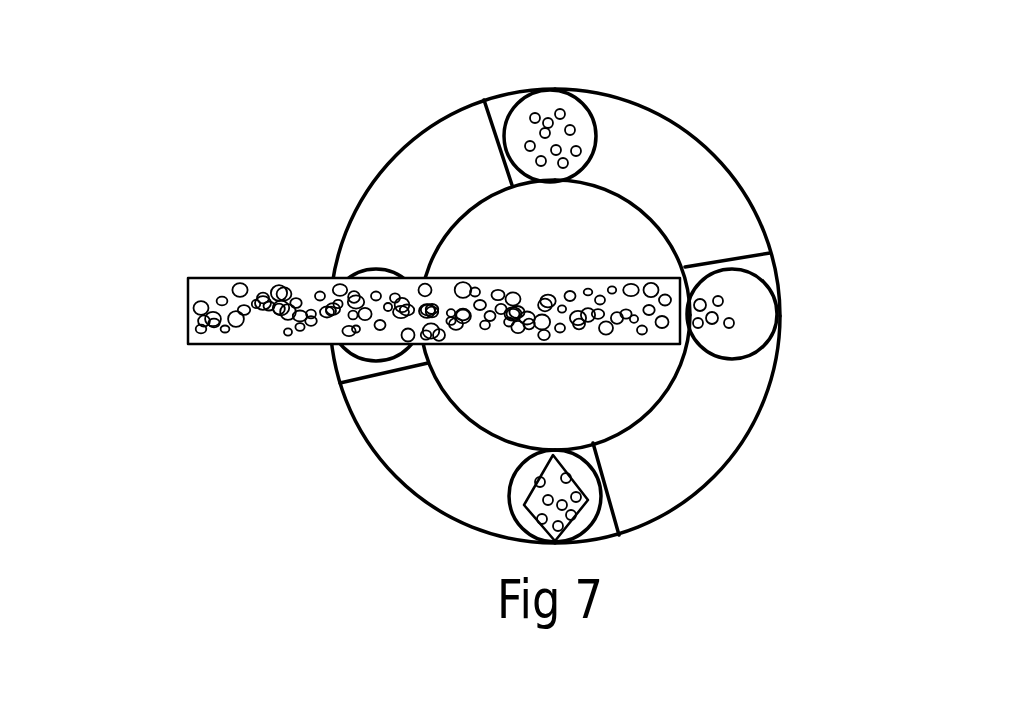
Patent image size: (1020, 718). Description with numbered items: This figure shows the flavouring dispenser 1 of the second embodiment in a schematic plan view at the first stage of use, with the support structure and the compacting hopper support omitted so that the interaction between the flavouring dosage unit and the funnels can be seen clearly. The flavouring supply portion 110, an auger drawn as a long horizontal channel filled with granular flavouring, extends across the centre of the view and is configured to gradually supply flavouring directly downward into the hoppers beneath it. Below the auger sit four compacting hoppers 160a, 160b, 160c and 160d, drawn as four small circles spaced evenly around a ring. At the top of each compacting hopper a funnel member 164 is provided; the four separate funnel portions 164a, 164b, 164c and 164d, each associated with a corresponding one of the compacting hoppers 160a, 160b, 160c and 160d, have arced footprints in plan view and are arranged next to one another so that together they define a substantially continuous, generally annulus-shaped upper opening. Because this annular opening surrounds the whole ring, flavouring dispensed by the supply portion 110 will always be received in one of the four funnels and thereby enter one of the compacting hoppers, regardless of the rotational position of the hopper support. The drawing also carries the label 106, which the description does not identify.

The flavouring dispenser 1 is at (410, 125).
The sample container 106 is at (180, 332).
The flavouring supply portion 110 is at (230, 277).
The compacting hopper 160a is at (763, 272).
The compacting hopper 160b is at (505, 505).
The compacting hopper 160c is at (352, 362).
The compacting hopper 160d is at (590, 113).
The funnel member 164 is at (753, 205).
The funnel portion 164a is at (717, 425).
The funnel portion 164b is at (397, 453).
The funnel portion 164c is at (383, 190).
The funnel portion 164d is at (683, 157).